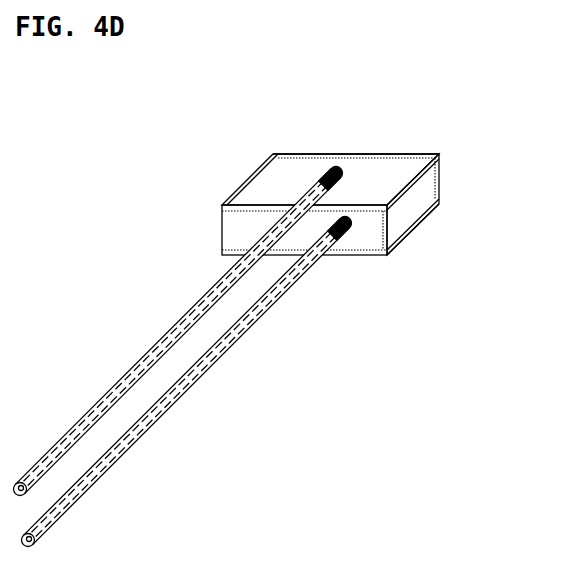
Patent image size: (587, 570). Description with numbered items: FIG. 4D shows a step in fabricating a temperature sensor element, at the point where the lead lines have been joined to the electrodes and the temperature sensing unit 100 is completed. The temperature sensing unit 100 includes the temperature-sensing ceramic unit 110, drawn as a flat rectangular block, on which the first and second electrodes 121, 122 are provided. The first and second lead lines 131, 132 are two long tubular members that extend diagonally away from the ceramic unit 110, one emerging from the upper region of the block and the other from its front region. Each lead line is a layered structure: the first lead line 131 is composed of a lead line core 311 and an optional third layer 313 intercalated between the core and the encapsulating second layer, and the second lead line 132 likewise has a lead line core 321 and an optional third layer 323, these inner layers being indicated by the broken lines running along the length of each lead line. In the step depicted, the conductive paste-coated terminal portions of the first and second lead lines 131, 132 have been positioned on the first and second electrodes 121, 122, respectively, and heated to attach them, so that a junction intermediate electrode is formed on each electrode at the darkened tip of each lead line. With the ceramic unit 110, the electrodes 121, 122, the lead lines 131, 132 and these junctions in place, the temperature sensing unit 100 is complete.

The temperature sensing unit 100 is at (295, 132).
The temperature-sensing ceramic unit 110 is at (430, 186).
The first electrode 121 is at (440, 154).
The second electrode 122 is at (432, 211).
The first lead line 131 is at (196, 310).
The second lead line 132 is at (205, 381).
The lead line core 311 is at (218, 283).
The third layer 313 is at (196, 306).
The lead line core 321 is at (248, 331).
The third layer 323 is at (224, 354).